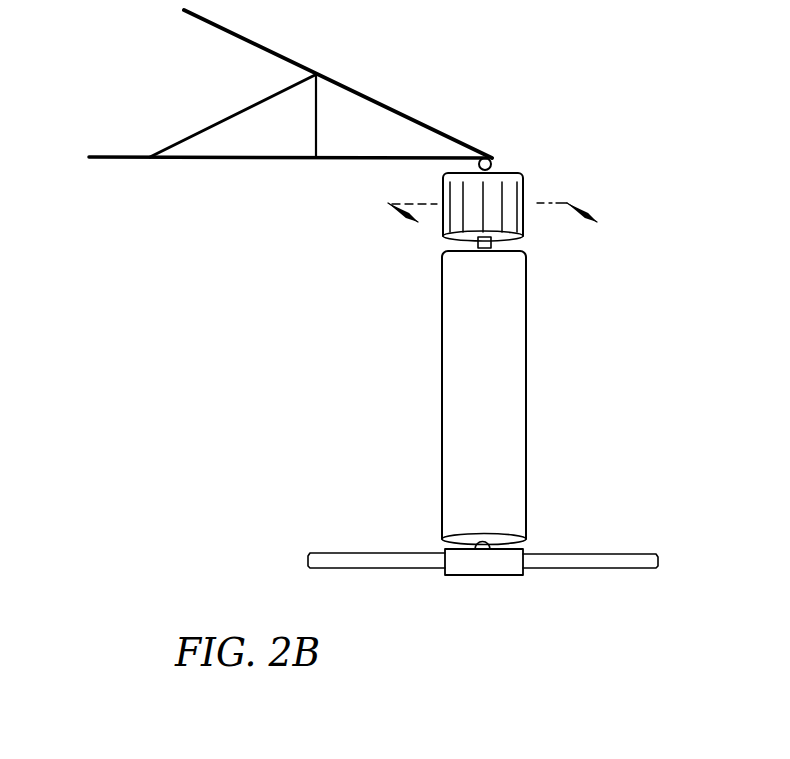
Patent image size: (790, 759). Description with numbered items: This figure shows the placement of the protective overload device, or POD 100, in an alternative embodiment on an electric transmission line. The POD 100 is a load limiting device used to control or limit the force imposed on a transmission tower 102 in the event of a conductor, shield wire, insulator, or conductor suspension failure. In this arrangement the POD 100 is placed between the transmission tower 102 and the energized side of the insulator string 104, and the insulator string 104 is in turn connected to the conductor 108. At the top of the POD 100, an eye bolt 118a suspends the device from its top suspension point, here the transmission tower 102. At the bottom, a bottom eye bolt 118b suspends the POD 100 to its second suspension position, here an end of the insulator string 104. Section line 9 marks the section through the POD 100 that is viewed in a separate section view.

The transmission tower 102 is at (225, 160).
The eye bolt 118a is at (495, 165).
The POD 100 is at (525, 220).
The section line 9- 9 is at (496, 220).
The bottom eye bolt 118b is at (478, 248).
The insulator string 104 is at (525, 315).
The conductor 108 is at (558, 570).